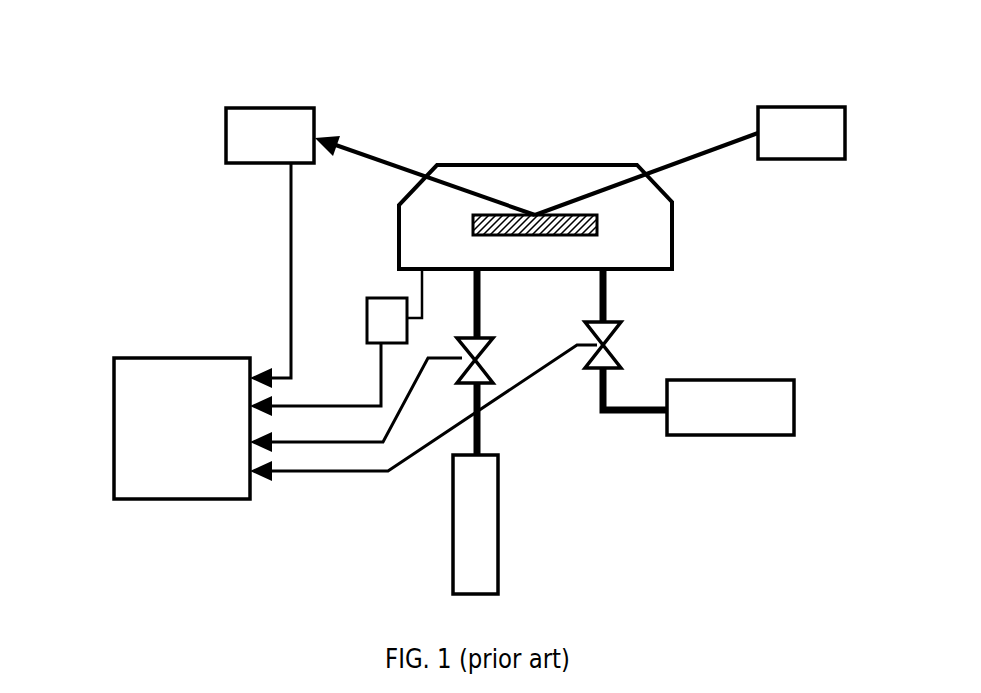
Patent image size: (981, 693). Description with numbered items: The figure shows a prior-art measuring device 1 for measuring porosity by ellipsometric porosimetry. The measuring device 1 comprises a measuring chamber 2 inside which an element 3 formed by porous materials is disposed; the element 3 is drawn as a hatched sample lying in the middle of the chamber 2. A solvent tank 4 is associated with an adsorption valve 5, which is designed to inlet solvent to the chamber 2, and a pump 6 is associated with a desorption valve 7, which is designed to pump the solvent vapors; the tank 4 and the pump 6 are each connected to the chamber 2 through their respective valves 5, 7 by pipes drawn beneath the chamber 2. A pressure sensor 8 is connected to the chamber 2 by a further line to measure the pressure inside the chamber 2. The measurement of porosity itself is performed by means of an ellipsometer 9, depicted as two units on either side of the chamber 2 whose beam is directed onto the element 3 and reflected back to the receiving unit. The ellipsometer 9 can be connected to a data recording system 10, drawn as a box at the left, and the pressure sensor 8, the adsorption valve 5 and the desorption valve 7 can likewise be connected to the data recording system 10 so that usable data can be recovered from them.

The measuring device 1 is at (128, 148).
The measuring chamber 2 is at (517, 167).
The element formed by porous materials 3 is at (597, 225).
The solvent tank 4 is at (498, 548).
The adsorption valve 5 is at (485, 351).
The pump 6 is at (718, 380).
The desorption valve 7 is at (612, 337).
The pressure sensor 8 is at (372, 298).
The ellipsometer 9 is at (803, 107).
The data recording system 10 is at (187, 357).